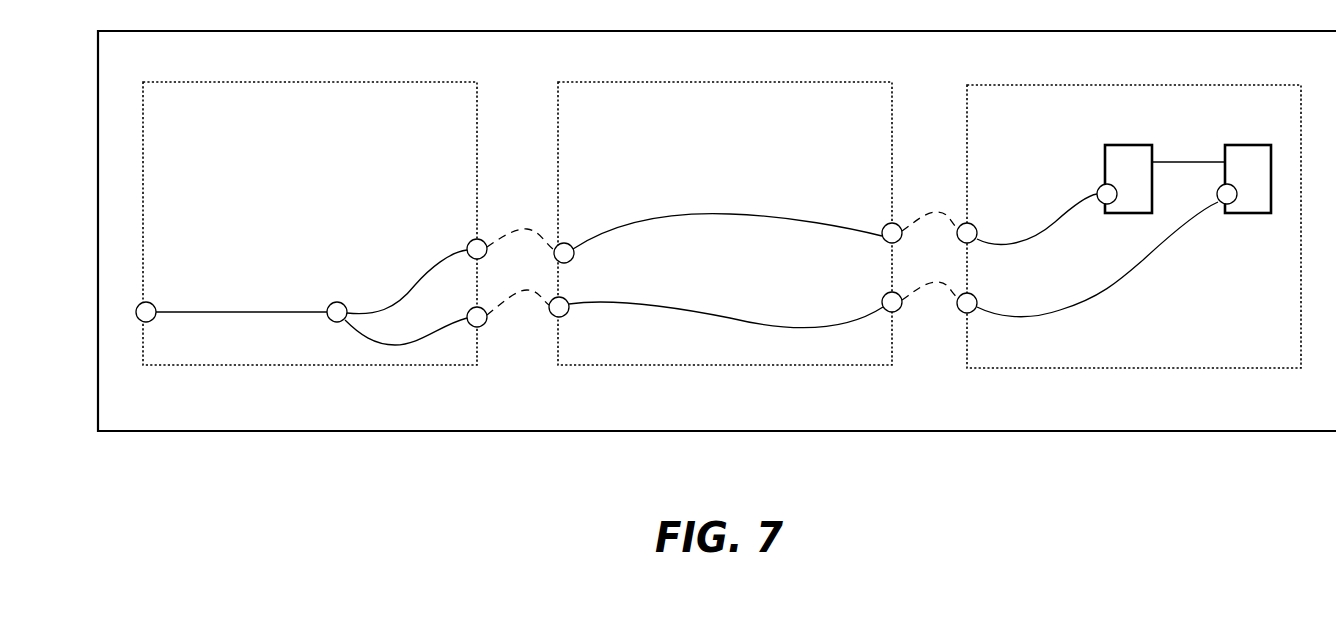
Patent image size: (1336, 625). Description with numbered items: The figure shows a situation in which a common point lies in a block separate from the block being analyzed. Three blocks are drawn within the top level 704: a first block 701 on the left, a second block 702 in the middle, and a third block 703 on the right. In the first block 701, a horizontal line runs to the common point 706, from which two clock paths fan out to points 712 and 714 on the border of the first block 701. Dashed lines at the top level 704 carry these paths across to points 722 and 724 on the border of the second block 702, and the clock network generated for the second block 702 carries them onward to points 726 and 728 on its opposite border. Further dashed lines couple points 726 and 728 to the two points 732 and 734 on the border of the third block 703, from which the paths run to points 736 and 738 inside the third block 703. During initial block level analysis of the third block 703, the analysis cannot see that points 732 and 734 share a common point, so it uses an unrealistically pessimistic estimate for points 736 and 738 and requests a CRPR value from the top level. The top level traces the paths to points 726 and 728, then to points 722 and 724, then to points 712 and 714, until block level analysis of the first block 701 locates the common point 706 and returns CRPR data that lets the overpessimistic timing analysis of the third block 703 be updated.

The block 1 701 is at (186, 148).
The block 2 702 is at (616, 155).
The block 3 703 is at (1013, 165).
The top level 704 is at (700, 421).
The common point 706 is at (326, 296).
The point on the border of block 1 712 is at (468, 244).
The point on the border of block 1 714 is at (472, 311).
The point on the border of block 2 722 is at (572, 260).
The point on the border of block 2 724 is at (566, 316).
The point on the border of block 2 726 is at (884, 226).
The point on the border of block 2 728 is at (884, 297).
The point on the border of block 3 732 is at (974, 243).
The point on the border of block 3 734 is at (974, 313).
The point in block 3 736 is at (1100, 205).
The point in block 3 738 is at (1221, 205).